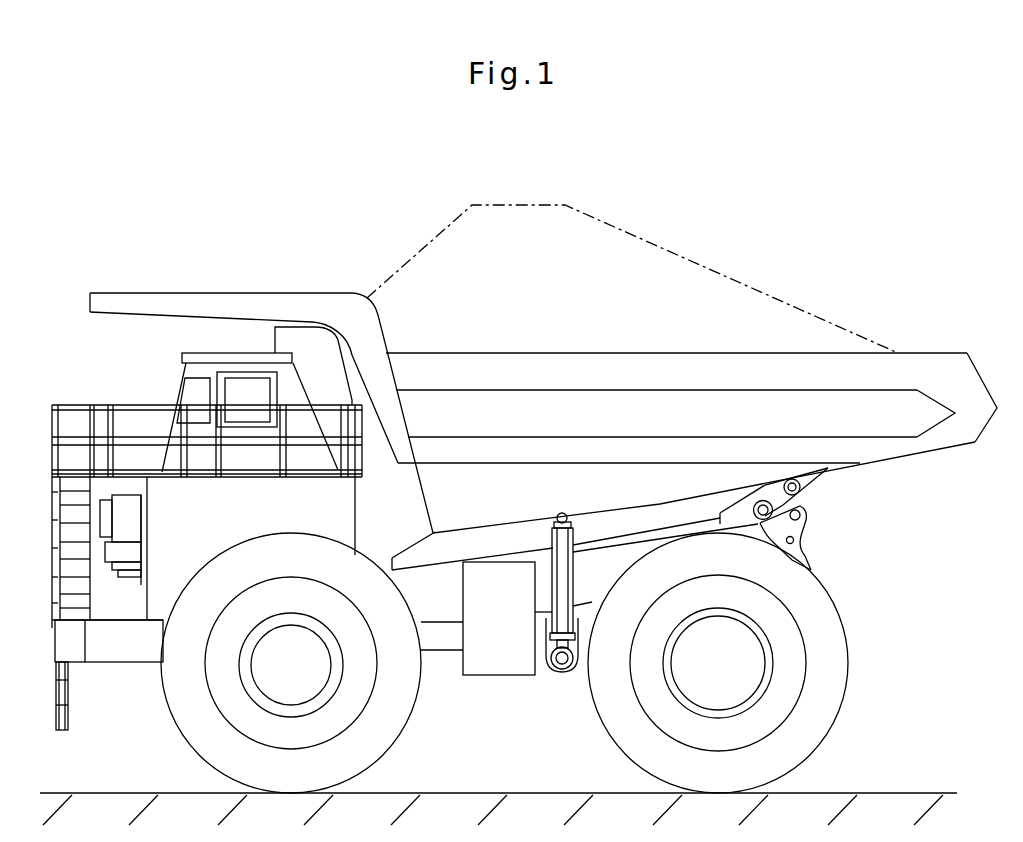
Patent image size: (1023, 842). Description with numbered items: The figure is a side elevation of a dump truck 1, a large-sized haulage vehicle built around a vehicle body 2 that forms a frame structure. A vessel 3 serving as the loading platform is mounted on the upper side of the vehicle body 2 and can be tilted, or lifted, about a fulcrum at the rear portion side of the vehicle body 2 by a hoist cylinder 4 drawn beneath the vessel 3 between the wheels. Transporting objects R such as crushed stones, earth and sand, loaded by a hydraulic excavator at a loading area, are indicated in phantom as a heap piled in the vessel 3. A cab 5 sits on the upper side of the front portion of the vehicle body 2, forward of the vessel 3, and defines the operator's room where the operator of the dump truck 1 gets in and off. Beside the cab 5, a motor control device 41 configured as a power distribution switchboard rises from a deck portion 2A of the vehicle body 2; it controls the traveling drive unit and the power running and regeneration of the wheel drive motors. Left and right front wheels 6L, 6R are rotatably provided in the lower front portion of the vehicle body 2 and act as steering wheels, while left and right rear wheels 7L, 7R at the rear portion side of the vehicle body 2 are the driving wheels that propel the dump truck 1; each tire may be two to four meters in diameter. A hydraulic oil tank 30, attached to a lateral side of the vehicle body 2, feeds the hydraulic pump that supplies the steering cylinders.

The dump truck 1 is at (86, 234).
The vehicle body 2 is at (443, 607).
The deck portion 2A is at (192, 477).
The vessel 3 is at (821, 370).
The hoist cylinder 4 is at (545, 662).
The cab 5 is at (192, 374).
The left front wheel 6L is at (185, 705).
The right front wheel 6R is at (252, 663).
The left rear wheel 7L is at (812, 738).
The right rear wheel 7R is at (755, 663).
The hydraulic oil tank 30 is at (500, 663).
The motor control device 41 is at (300, 338).
The transporting objects R is at (628, 228).